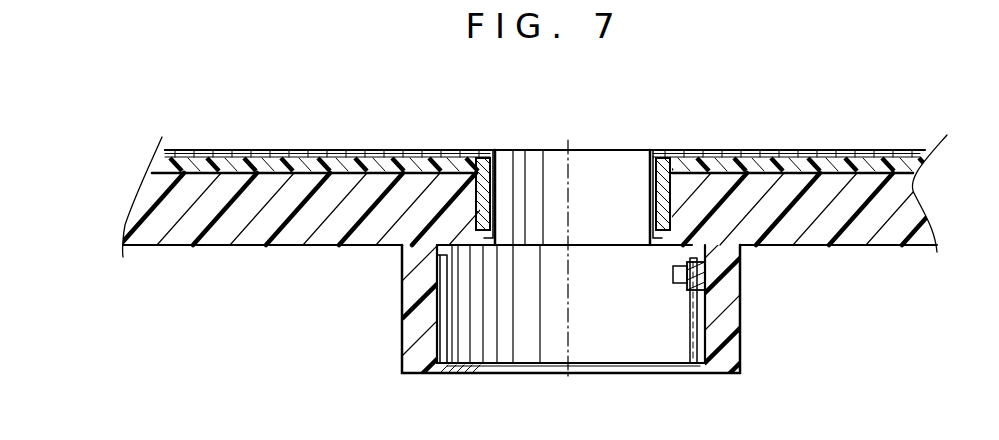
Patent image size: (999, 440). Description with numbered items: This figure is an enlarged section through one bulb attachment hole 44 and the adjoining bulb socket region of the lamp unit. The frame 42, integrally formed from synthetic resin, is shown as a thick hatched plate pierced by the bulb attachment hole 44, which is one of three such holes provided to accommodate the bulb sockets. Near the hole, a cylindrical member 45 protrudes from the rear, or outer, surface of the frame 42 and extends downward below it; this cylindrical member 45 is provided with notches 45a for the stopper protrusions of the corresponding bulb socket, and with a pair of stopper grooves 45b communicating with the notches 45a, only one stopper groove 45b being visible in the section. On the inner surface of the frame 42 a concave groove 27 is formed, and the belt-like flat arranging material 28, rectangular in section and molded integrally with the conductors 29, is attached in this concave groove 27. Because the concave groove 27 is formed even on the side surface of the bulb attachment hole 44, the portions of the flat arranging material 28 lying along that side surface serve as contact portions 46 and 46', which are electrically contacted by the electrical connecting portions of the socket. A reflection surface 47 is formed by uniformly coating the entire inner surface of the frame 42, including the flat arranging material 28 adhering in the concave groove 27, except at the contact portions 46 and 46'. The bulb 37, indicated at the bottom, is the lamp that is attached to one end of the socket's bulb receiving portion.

The concave groove 27 is at (473, 203).
The flat arranging material 28 is at (167, 167).
The conductors 29 is at (212, 158).
The bulb 37 is at (605, 439).
The frame 42 is at (178, 236).
The bulb attachment hole 44 is at (598, 150).
The cylindrical member 45 is at (742, 342).
The notches 45a is at (440, 332).
The stopper grooves 45b is at (707, 272).
The contact portion 46 is at (488, 159).
The contact portion 46' is at (675, 159).
The reflection surface 47 is at (292, 160).